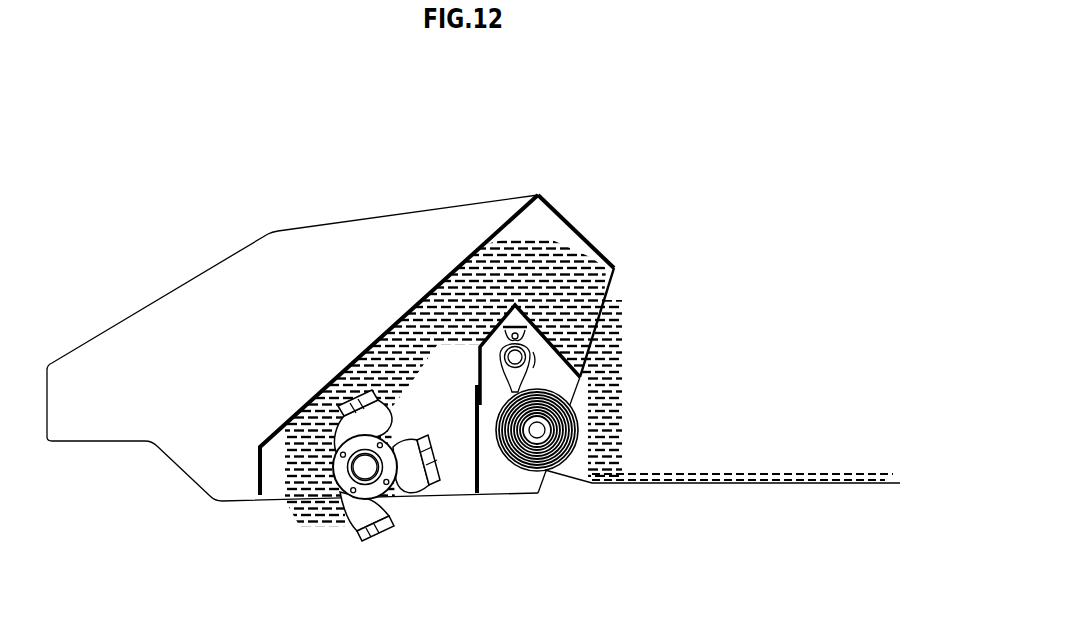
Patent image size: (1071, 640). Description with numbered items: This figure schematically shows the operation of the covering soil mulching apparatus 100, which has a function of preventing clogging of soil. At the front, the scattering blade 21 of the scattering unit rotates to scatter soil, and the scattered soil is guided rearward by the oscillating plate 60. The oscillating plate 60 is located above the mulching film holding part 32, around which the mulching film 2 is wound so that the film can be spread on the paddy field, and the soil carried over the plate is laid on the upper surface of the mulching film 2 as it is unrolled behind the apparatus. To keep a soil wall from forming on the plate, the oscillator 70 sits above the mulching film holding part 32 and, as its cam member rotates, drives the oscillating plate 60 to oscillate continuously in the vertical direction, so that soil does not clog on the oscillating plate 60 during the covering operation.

The covering soil mulching apparatus 100 is at (793, 98).
The oscillating plate 60 is at (562, 355).
The oscillator 70 is at (490, 385).
The mulching film holding part 32 is at (589, 425).
The scattering blade 21 is at (361, 545).
The mulching film 2 is at (811, 485).